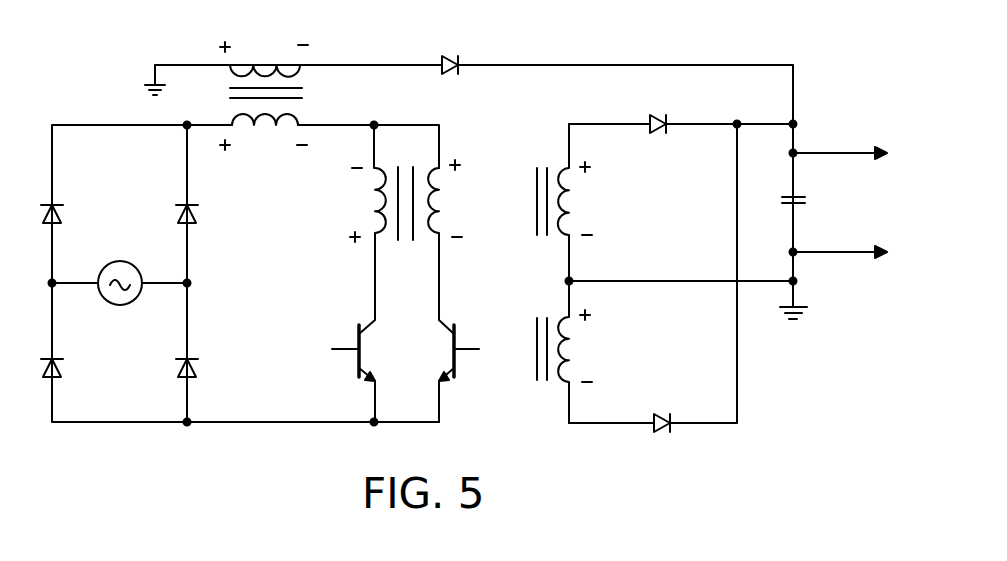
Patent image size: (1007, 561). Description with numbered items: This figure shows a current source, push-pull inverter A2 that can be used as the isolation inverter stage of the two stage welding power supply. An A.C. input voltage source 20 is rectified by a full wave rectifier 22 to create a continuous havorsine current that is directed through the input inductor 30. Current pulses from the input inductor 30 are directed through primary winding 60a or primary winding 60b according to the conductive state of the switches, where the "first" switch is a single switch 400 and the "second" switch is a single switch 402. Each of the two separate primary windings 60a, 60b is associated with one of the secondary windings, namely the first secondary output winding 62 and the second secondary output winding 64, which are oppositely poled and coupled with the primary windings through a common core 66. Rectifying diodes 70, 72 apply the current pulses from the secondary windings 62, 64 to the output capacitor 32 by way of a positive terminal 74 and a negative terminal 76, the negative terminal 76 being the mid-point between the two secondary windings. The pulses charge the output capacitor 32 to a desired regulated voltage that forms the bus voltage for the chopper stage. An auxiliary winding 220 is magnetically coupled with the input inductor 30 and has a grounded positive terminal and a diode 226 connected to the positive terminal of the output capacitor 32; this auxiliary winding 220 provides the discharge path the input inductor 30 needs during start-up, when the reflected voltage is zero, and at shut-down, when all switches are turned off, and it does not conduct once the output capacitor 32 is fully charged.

The auxiliary winding 220 is at (250, 63).
The diode 226 is at (447, 58).
The input inductor 30 is at (265, 132).
The A.C. input voltage source 20 is at (117, 260).
The full wave rectifier 22 is at (197, 313).
The primary winding 60a is at (368, 202).
The primary winding 60b is at (448, 207).
The common core 66 is at (412, 168).
The first switch 400 is at (356, 341).
The second switch 402 is at (460, 338).
The first secondary output winding 62 is at (575, 203).
The second secondary output winding 64 is at (575, 350).
The rectifying diode 70 is at (658, 133).
The rectifying diode 72 is at (660, 415).
The current source push-pull inverter A2 is at (567, 440).
The positive terminal 74 is at (795, 123).
The output capacitor 32 is at (808, 198).
The negative terminal 76 is at (798, 283).